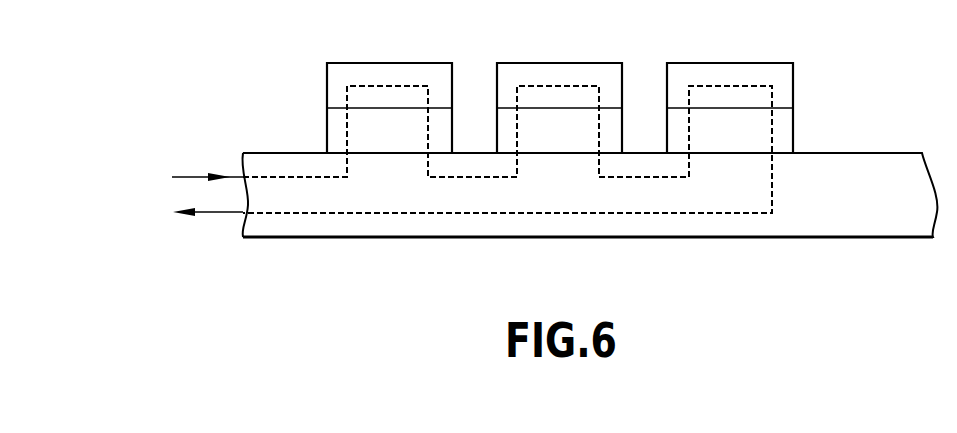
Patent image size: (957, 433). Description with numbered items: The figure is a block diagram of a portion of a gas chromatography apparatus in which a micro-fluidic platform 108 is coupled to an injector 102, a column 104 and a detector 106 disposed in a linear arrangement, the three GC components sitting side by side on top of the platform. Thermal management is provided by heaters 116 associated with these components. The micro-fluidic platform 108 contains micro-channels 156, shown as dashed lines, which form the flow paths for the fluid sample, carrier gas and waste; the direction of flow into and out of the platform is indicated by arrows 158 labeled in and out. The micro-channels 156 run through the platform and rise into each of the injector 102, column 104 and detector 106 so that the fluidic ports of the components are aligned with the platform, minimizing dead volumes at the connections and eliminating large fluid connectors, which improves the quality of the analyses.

The injector 102 is at (335, 72).
The column 104 is at (610, 72).
The detector 106 is at (782, 70).
The micro-fluidic platform 108 is at (855, 223).
The heater 116 is at (335, 142).
The micro-channels 156 is at (405, 82).
The arrows 158 is at (183, 177).